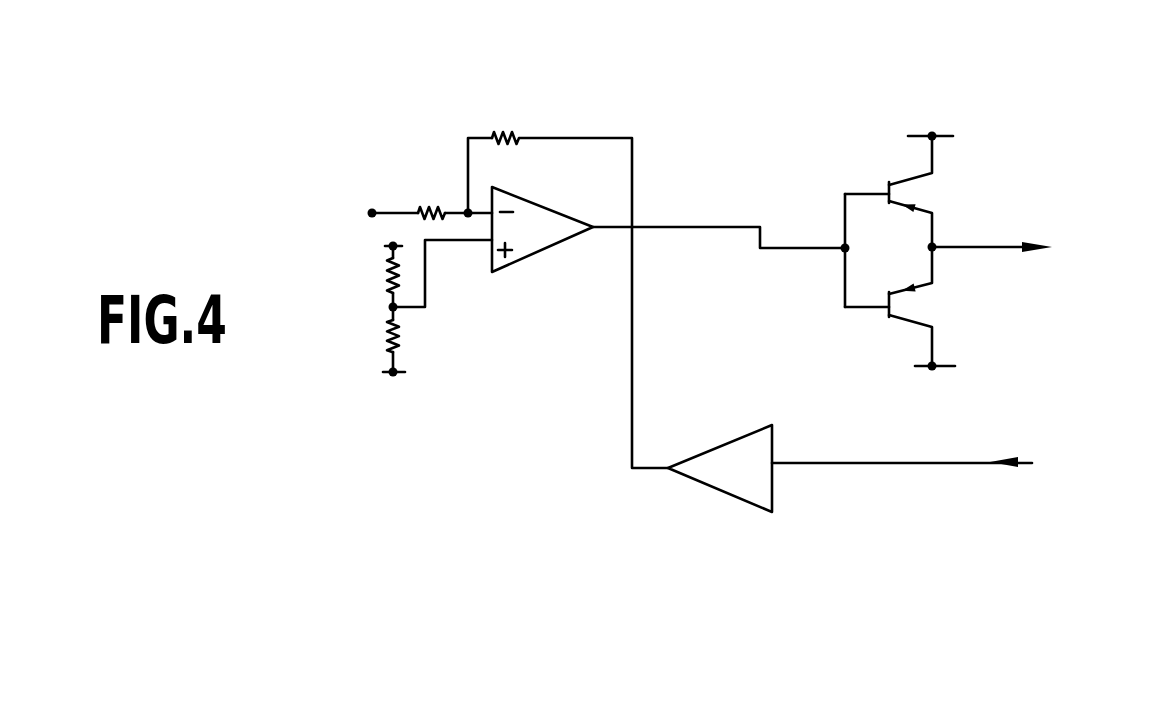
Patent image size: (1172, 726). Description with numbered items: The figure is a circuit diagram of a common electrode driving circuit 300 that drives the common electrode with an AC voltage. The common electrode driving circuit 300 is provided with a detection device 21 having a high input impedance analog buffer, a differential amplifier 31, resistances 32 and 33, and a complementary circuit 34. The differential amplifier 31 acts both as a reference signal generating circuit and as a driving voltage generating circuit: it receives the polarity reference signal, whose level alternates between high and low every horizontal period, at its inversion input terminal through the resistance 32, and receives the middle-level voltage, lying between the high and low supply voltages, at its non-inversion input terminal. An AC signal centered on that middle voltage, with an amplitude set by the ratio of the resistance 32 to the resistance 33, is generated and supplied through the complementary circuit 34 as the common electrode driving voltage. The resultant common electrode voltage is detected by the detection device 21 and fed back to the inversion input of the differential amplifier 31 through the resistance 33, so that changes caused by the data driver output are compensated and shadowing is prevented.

The common electrode driving circuit 300 is at (742, 110).
The resistance 32 is at (406, 171).
The resistance 33 is at (538, 119).
The differential amplifier 31 is at (540, 253).
The complementary circuit 34 is at (992, 199).
The detection device 21 is at (718, 487).